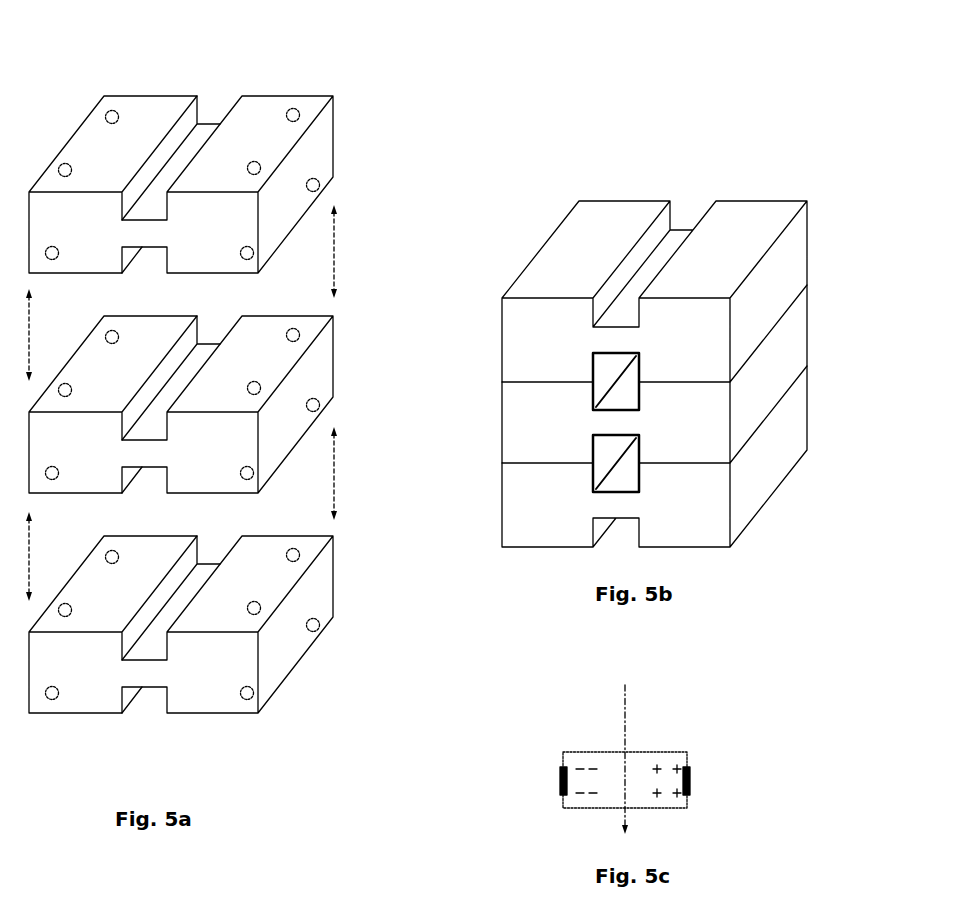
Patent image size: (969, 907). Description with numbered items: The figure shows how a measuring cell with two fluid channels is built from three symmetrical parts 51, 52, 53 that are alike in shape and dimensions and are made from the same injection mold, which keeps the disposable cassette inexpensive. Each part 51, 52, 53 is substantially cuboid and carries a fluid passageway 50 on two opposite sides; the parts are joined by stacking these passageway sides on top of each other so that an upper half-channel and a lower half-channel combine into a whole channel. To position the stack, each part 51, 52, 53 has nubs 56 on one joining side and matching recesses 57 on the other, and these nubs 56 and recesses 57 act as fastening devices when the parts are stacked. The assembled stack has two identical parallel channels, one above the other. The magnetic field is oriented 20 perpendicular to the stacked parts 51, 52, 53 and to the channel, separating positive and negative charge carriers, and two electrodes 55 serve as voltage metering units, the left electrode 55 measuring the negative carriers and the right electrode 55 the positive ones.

In FIG. 5C, the magnetic field orientation 20 is at (626, 720).
In FIG. 5A, the fluid passageway 50 is at (210, 113).
In FIG. 5A, the first part 51 is at (327, 143).
In FIG. 5B, the first part 51 is at (518, 326).
In FIG. 5A, the second part 52 is at (518, 451).
In FIG. 5B, the second part 52 is at (518, 451).
In FIG. 5A, the third part 53 is at (518, 472).
In FIG. 5B, the third part 53 is at (518, 472).
In FIG. 5C, the electrode 55 is at (683, 780).
In FIG. 5A, the nub 56 is at (60, 165).
In FIG. 5A, the recess 57 is at (254, 255).